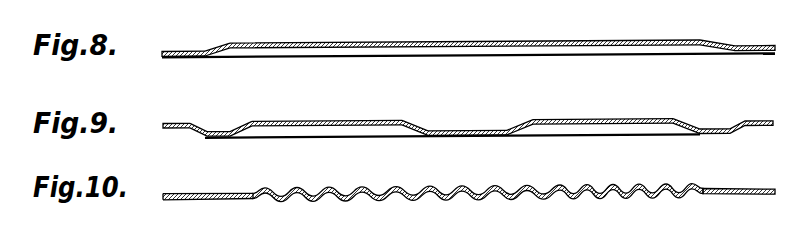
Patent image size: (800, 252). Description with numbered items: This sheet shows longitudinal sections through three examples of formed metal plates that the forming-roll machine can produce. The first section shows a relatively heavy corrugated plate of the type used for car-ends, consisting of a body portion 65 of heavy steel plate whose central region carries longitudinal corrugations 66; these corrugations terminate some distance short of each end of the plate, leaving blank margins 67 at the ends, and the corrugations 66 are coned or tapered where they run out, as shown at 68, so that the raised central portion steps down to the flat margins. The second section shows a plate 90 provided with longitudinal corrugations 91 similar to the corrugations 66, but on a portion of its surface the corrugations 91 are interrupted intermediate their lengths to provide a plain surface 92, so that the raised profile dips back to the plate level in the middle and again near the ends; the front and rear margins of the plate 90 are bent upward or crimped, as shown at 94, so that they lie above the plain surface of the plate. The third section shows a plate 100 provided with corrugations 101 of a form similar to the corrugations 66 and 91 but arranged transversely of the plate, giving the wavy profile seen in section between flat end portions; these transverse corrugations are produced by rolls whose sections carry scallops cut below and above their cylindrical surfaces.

In FIG. 8, the body portion 65 is at (592, 40).
In FIG. 8, the longitudinal corrugations 66 is at (299, 43).
In FIG. 8, the blank margins 67 is at (196, 51).
In FIG. 8, the coned or tapered ends of corrugations 68 is at (217, 46).
In FIG. 9, the plate 90 is at (617, 119).
In FIG. 9, the longitudinal corrugations 91 is at (298, 121).
In FIG. 9, the plain surface 92 is at (177, 101).
In FIG. 9, the crimped portions 94 is at (193, 136).
In FIG. 10, the plate 100 is at (545, 187).
In FIG. 10, the transverse corrugations 101 is at (688, 185).